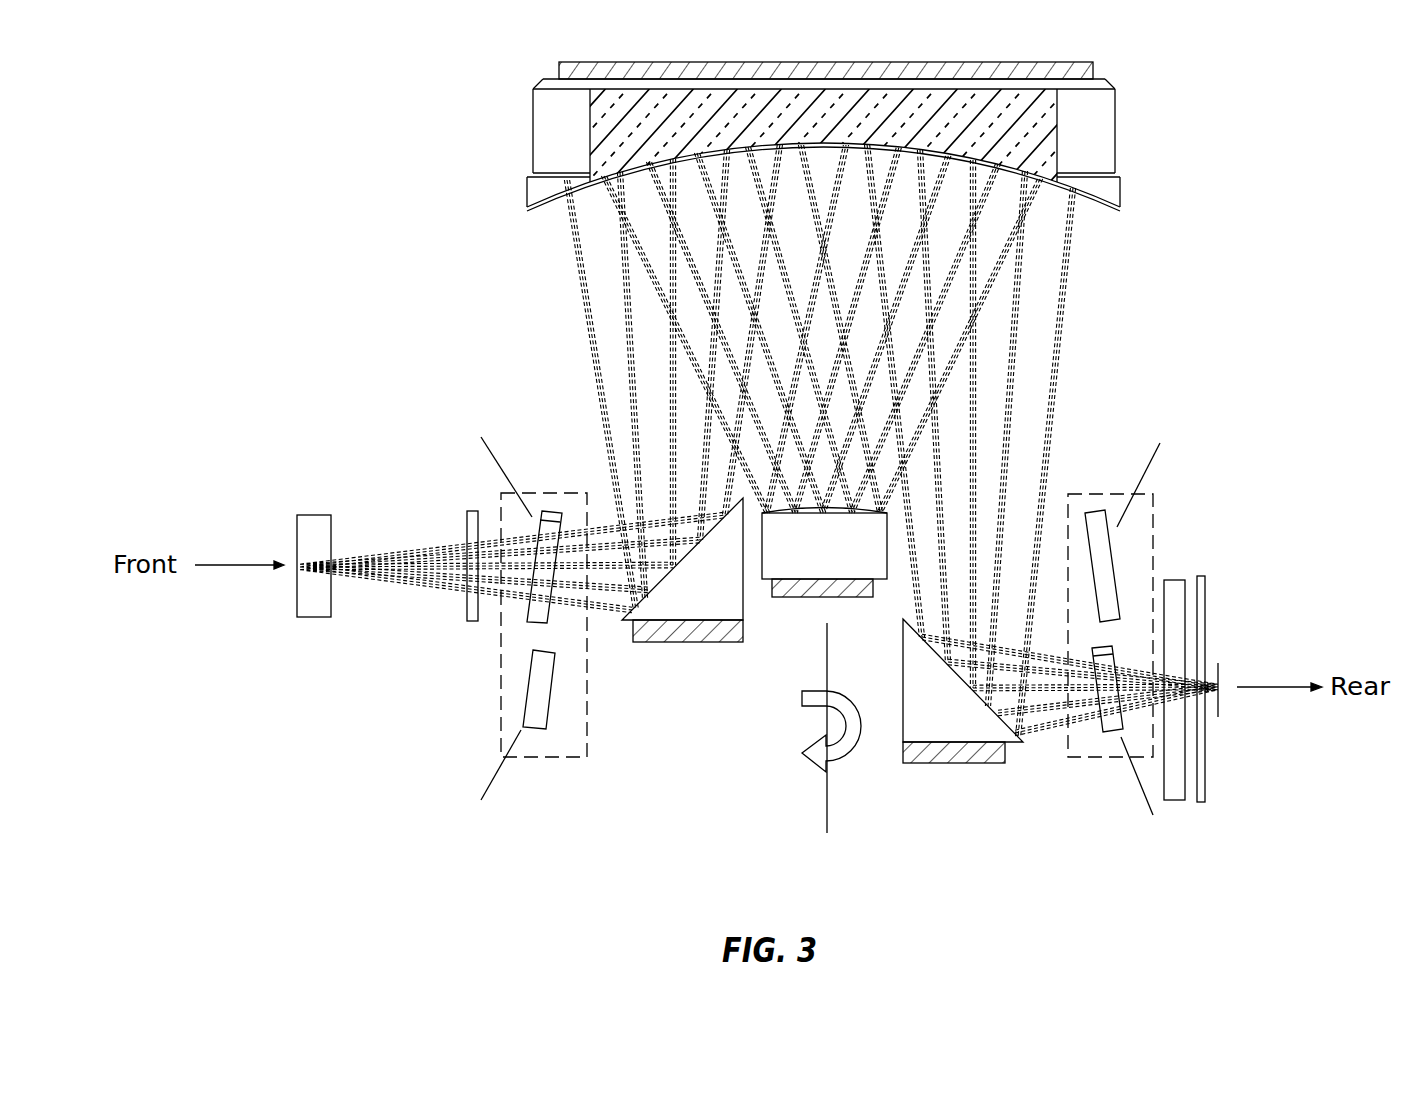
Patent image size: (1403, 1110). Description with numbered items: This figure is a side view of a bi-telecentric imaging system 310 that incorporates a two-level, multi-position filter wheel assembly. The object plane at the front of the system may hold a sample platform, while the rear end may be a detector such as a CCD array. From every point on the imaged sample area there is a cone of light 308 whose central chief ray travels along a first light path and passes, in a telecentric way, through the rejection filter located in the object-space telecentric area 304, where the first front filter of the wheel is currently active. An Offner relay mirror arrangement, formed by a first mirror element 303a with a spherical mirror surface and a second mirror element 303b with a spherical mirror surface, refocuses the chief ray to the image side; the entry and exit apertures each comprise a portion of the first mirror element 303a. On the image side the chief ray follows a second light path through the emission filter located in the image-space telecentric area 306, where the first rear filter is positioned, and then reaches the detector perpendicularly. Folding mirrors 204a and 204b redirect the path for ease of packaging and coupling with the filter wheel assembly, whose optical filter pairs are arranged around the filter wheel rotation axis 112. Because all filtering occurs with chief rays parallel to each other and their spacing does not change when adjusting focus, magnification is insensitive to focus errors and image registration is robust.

The first mirror element 303a is at (573, 122).
The second mirror element 303b is at (810, 559).
The folding mirror 204a is at (700, 597).
The folding mirror 204b is at (937, 710).
The cone of light 308 is at (341, 549).
The object-space telecentric area 304 is at (556, 760).
The image-space telecentric area 306 is at (1090, 760).
The imaging system 310 is at (1170, 255).
The axis 112 is at (822, 768).